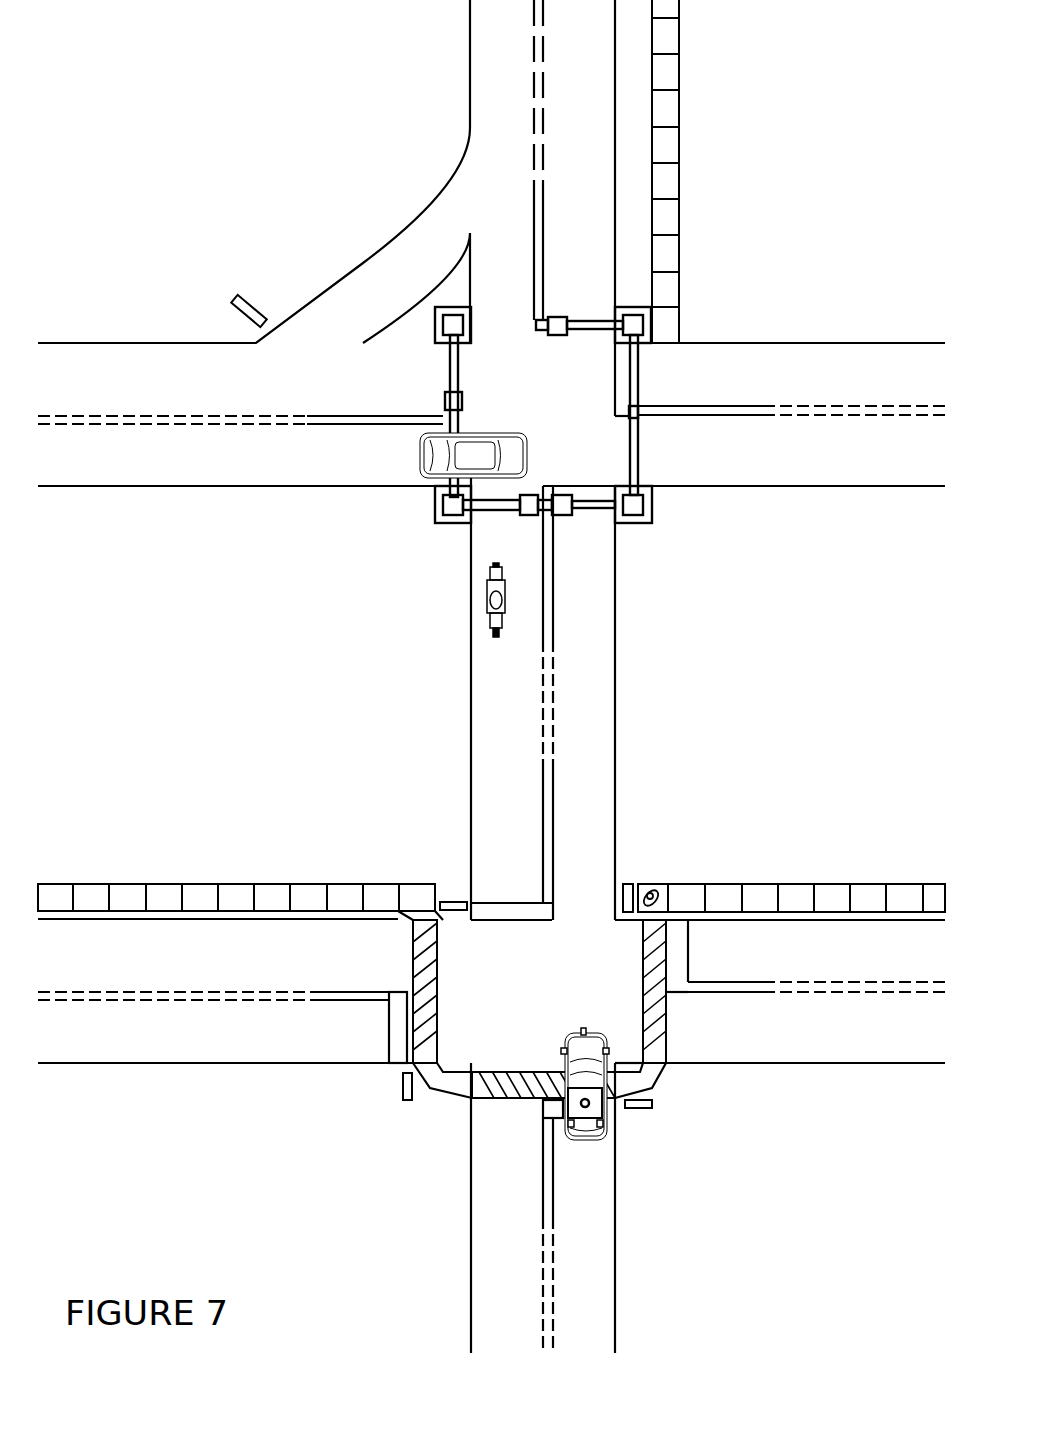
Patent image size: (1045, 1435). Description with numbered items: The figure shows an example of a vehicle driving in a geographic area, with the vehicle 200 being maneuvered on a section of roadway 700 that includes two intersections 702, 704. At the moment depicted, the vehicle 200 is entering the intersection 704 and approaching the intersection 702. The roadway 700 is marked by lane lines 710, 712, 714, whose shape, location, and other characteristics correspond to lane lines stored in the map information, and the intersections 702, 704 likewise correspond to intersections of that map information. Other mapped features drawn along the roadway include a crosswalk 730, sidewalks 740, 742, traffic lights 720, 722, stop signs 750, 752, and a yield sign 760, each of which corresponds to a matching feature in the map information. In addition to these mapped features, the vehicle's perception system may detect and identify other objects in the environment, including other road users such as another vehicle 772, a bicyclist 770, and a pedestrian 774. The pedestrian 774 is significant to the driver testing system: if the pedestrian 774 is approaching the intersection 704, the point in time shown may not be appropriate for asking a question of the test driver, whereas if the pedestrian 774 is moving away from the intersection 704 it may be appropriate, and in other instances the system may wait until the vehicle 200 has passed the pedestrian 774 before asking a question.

The roadway 700 is at (491, 676).
The intersection 702 is at (543, 415).
The intersection 704 is at (539, 991).
The lane line 710 is at (120, 1001).
The lane line 712 is at (198, 1064).
The lane line 714 is at (544, 91).
The traffic light 720 is at (567, 318).
The traffic light 722 is at (448, 392).
The crosswalk 730 is at (472, 1074).
The sidewalk 740 is at (716, 884).
The sidewalk 742 is at (680, 164).
The stop sign 750 is at (450, 902).
The stop sign 752 is at (652, 1107).
The yield sign 760 is at (230, 311).
The bicyclist 770 is at (487, 613).
The vehicle 772 is at (418, 456).
The pedestrian 774 is at (652, 890).
The vehicle 200 is at (607, 1122).